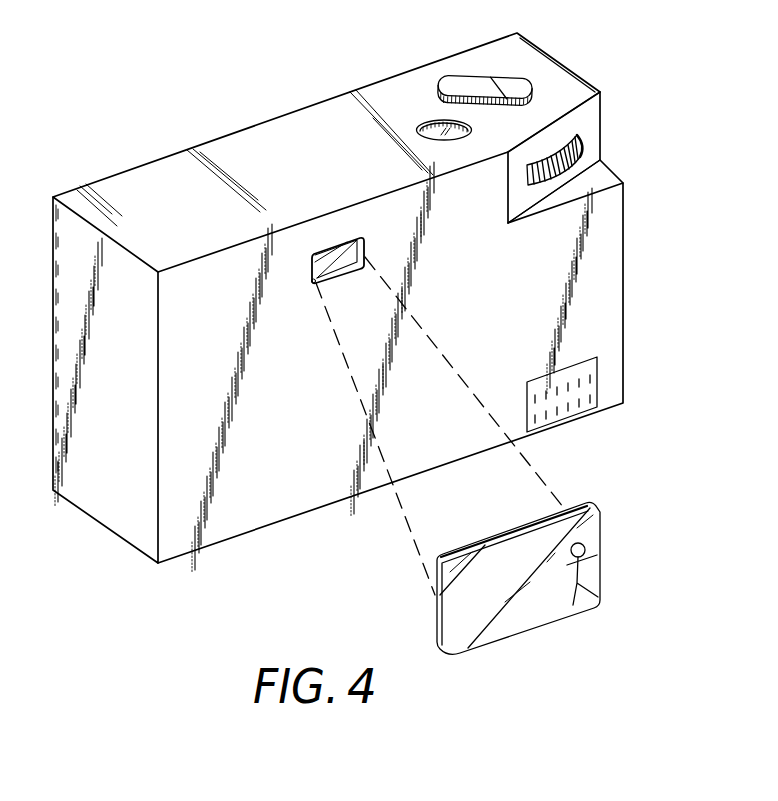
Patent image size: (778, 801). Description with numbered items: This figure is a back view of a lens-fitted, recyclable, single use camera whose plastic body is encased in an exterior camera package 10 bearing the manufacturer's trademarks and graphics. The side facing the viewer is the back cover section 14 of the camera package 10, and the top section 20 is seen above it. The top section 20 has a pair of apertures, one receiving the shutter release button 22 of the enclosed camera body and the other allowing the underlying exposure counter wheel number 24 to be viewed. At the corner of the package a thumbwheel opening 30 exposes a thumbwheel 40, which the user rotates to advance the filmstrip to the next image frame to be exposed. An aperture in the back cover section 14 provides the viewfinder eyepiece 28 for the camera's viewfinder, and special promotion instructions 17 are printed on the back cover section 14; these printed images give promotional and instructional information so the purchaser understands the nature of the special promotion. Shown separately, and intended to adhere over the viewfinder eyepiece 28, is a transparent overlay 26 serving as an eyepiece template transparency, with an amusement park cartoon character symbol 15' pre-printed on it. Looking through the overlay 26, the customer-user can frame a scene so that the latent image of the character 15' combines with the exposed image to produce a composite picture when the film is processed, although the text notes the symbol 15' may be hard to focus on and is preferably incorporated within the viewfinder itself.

The camera package 10 is at (203, 343).
The back cover section 14 is at (268, 503).
The character symbol 15' is at (619, 574).
The special promotion instructions 17 is at (553, 417).
The top section 20 is at (158, 173).
The shutter release button 22 is at (470, 78).
The exposure counter wheel number 24 is at (425, 120).
The transparent overlay 26 is at (604, 527).
The viewfinder eyepiece 28 is at (332, 242).
The thumbwheel opening 30 is at (600, 134).
The thumbwheel 40 is at (600, 158).